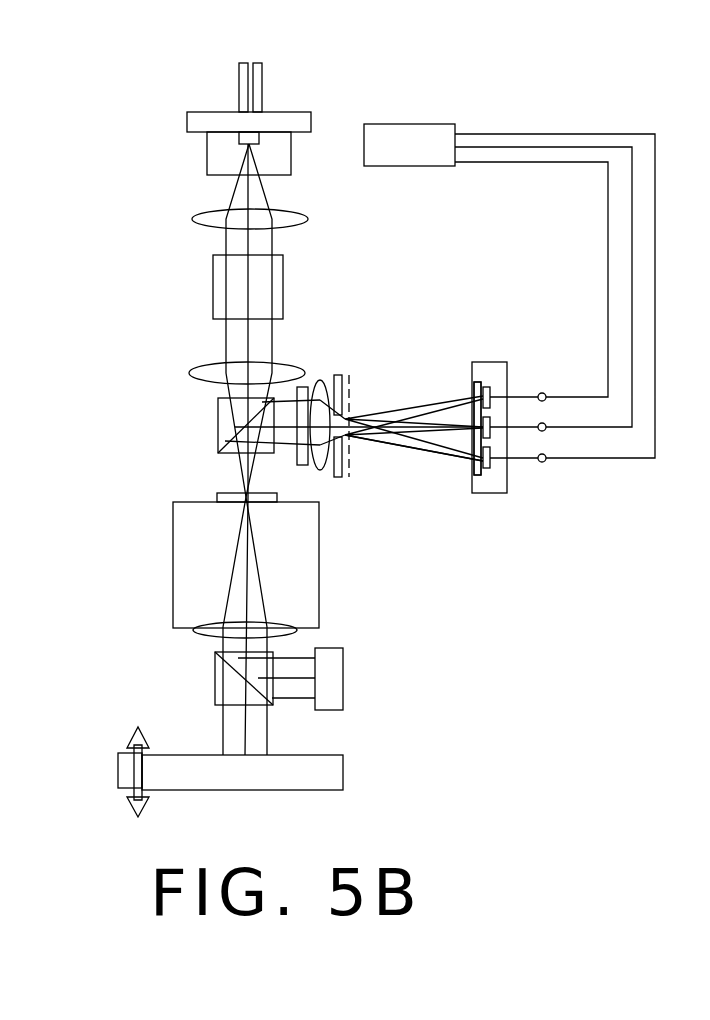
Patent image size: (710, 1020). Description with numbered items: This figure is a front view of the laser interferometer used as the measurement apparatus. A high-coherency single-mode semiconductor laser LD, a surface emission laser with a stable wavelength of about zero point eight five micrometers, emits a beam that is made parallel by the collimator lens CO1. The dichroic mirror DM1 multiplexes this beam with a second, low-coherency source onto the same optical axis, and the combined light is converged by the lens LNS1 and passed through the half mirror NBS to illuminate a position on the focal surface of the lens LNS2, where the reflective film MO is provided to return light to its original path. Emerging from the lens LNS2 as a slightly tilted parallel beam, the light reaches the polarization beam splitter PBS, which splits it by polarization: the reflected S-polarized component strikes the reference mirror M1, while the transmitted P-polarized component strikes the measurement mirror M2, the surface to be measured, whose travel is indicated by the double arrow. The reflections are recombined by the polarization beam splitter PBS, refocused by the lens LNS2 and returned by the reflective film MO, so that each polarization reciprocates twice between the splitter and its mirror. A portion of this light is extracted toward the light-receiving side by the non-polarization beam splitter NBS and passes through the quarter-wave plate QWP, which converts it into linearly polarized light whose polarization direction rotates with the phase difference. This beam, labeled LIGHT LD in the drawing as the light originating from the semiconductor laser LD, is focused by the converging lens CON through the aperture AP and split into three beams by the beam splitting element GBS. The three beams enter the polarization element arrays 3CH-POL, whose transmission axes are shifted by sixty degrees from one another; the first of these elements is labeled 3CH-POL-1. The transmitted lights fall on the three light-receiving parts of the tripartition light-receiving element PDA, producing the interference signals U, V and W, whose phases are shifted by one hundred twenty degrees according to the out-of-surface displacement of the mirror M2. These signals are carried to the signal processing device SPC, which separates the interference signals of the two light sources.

The semiconductor laser LD is at (207, 152).
The collimator lens CO1 is at (198, 210).
The dichroic mirror DM1 is at (213, 268).
The lens LNS1 is at (212, 364).
The non-polarization beam splitter NBS is at (218, 425).
The reflective film MO is at (197, 502).
The lens LNS2 is at (212, 636).
The polarization beam splitter PBS is at (215, 690).
The reference mirror M1 is at (343, 660).
The measurement mirror M2 is at (327, 755).
The quarter-wave plate QWP is at (302, 465).
The converging lens CON is at (320, 380).
The aperture AP is at (340, 375).
The beam splitting element GBS is at (349, 477).
The light from laser diode LIGHT LD is at (442, 450).
The polarization element arrays 3CH-POL is at (476, 387).
The tripartition light-receiving element PDA is at (484, 387).
The three-channel polarizer element 3CH-POL-1 is at (478, 385).
The signal processing device SPC is at (509, 291).
The interference signal U is at (531, 411).
The interference signal V is at (530, 441).
The interference signal W is at (533, 471).